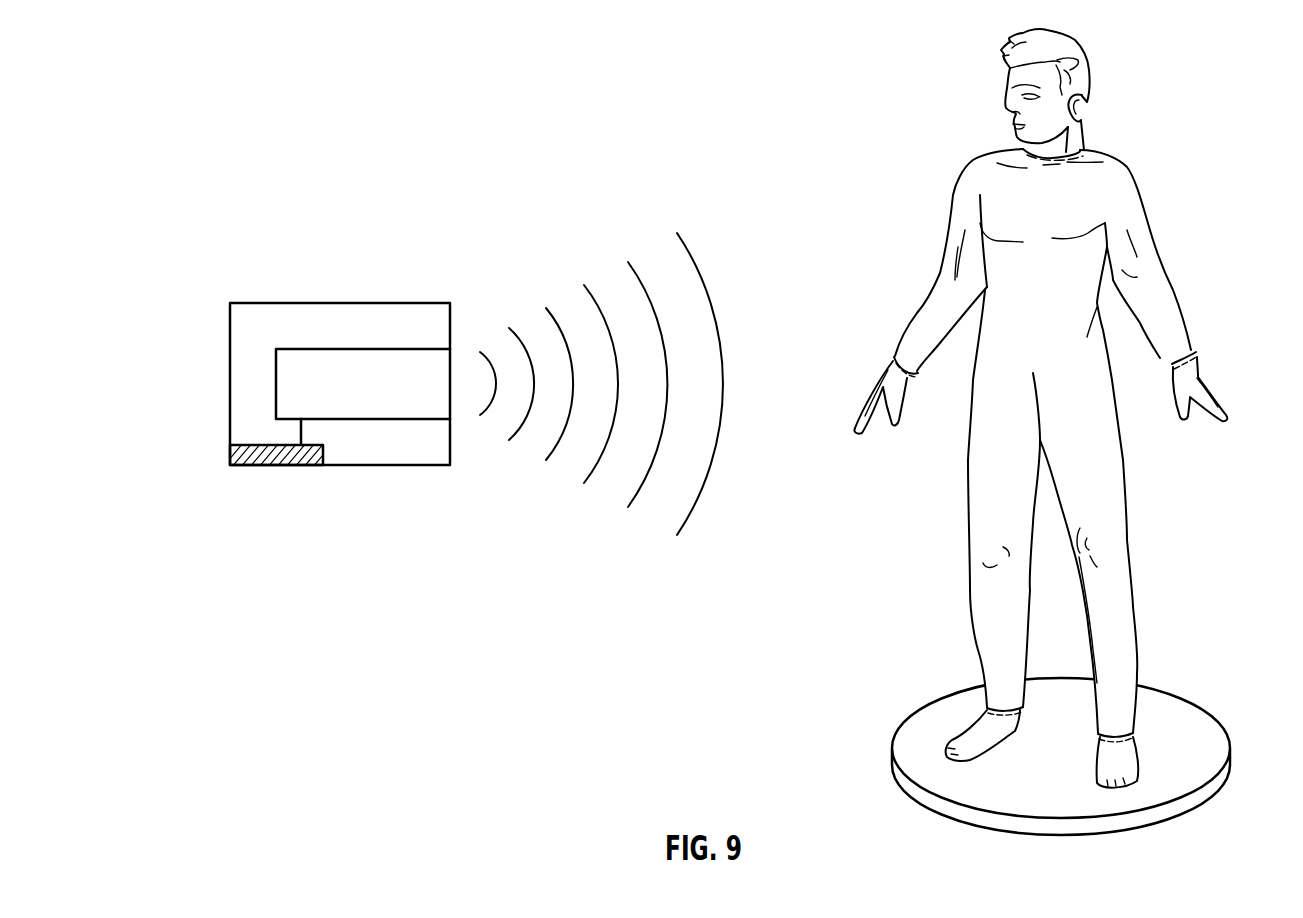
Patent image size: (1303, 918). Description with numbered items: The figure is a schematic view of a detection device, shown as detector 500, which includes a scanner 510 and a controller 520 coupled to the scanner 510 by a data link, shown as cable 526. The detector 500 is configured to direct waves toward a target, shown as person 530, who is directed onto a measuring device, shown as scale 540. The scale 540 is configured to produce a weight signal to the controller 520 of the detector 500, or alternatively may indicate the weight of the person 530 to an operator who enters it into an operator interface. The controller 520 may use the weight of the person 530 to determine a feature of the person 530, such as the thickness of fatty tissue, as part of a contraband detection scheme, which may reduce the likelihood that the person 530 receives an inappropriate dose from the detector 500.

The detector 500 is at (211, 176).
The scanner 510 is at (347, 361).
The controller 520 is at (268, 468).
The connector 526 is at (298, 432).
The person 530 is at (1112, 157).
The scale 540 is at (1203, 727).